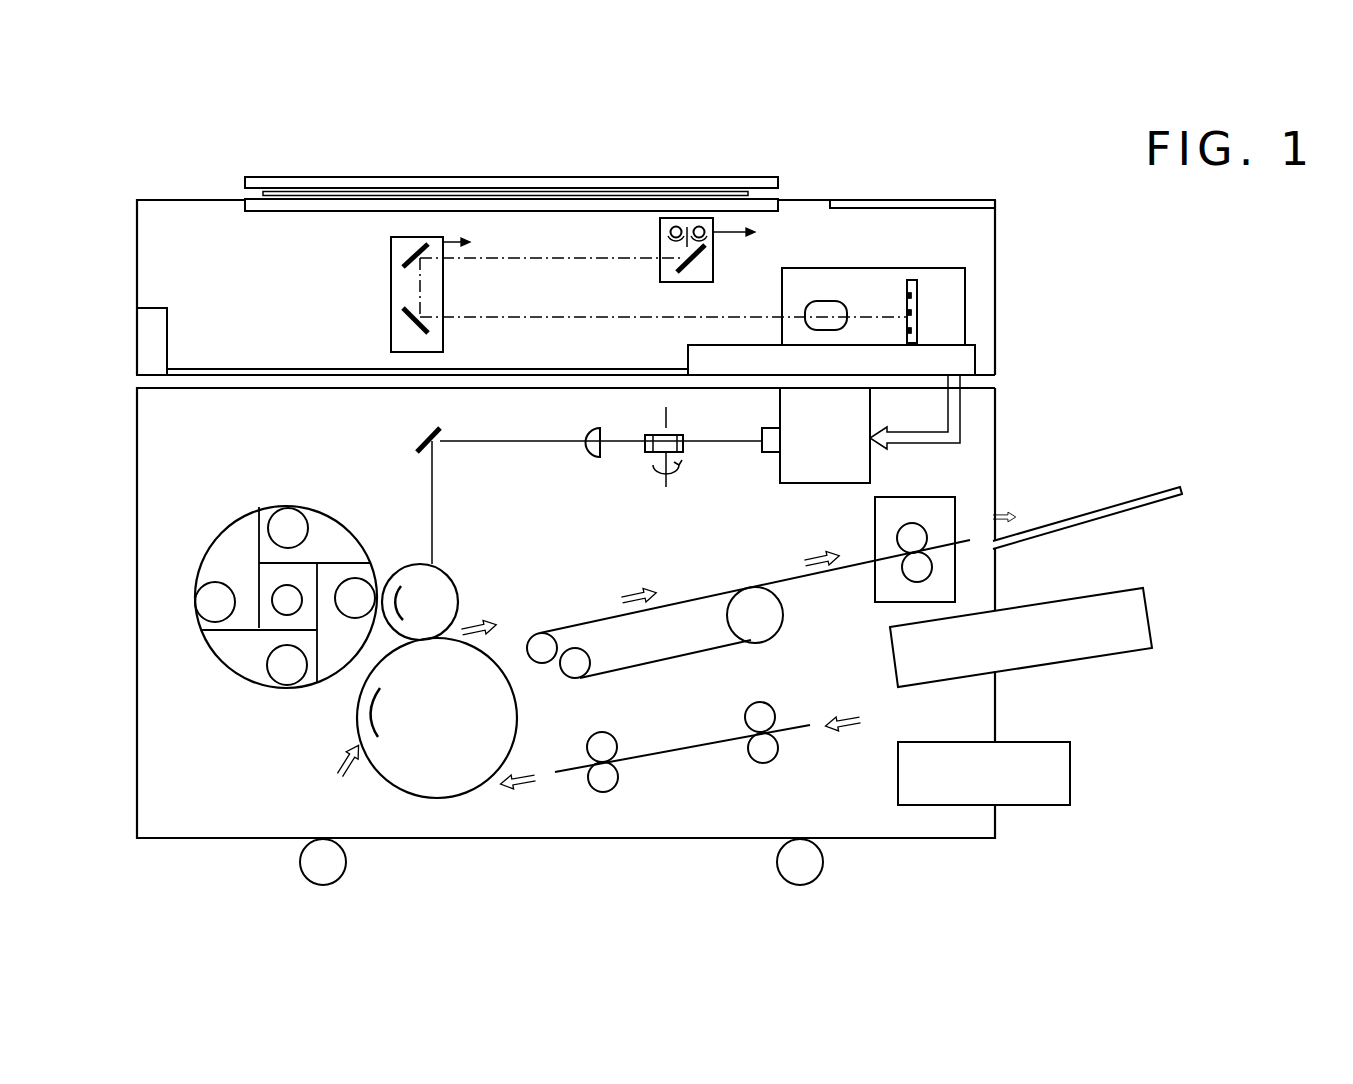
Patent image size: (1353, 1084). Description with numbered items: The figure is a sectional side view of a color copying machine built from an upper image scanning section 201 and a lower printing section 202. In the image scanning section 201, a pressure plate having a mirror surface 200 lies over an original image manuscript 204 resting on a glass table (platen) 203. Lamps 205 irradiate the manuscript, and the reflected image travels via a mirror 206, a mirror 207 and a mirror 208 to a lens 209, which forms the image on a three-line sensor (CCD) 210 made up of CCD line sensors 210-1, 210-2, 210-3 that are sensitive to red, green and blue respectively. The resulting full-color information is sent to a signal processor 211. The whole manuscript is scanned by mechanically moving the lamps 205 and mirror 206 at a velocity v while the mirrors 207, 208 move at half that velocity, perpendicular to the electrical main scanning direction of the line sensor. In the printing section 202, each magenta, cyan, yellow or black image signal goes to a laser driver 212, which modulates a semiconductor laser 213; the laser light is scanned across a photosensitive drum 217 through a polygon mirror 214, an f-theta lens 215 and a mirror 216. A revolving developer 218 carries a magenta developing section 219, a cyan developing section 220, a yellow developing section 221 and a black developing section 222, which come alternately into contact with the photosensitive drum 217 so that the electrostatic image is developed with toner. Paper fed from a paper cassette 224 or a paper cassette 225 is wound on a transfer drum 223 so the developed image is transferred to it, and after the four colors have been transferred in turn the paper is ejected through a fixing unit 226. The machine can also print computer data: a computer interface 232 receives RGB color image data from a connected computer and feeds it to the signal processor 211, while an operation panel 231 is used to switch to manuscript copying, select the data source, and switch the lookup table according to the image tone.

The pressure plate having a mirror surface 200 is at (370, 177).
The image scanning section 201 is at (995, 207).
The printing section 202 is at (997, 478).
The glass table (platen) 203 is at (770, 200).
The original image manuscript 204 is at (733, 192).
The lamps 205 is at (700, 227).
The mirror 206 is at (690, 278).
The mirror 207 is at (398, 252).
The mirror 208 is at (400, 322).
The lens 209 is at (828, 300).
The three-line sensor (CCD) 210 is at (918, 283).
The CCD line sensor 210-1 is at (917, 295).
The CCD line sensor 210-2 is at (917, 313).
The CCD line sensor 210-3 is at (917, 330).
The signal processor 211 is at (975, 362).
The laser driver 212 is at (870, 470).
The semiconductor laser 213 is at (760, 453).
The polygon mirror 214 is at (680, 433).
The f-theta lens 215 is at (583, 428).
The mirror 216 is at (432, 430).
The photosensitive drum 217 is at (445, 572).
The revolving developer 218 is at (338, 520).
The magenta developing section 219 is at (365, 577).
The cyan developing section 220 is at (287, 690).
The yellow developing section 221 is at (193, 602).
The black developing section 222 is at (287, 507).
The transfer drum 223 is at (380, 777).
The paper cassette 224 is at (1070, 780).
The paper cassette 225 is at (1152, 630).
The fixing unit 226 is at (955, 583).
The operation panel 231 is at (908, 200).
The computer interface (I/F) 232 is at (137, 338).